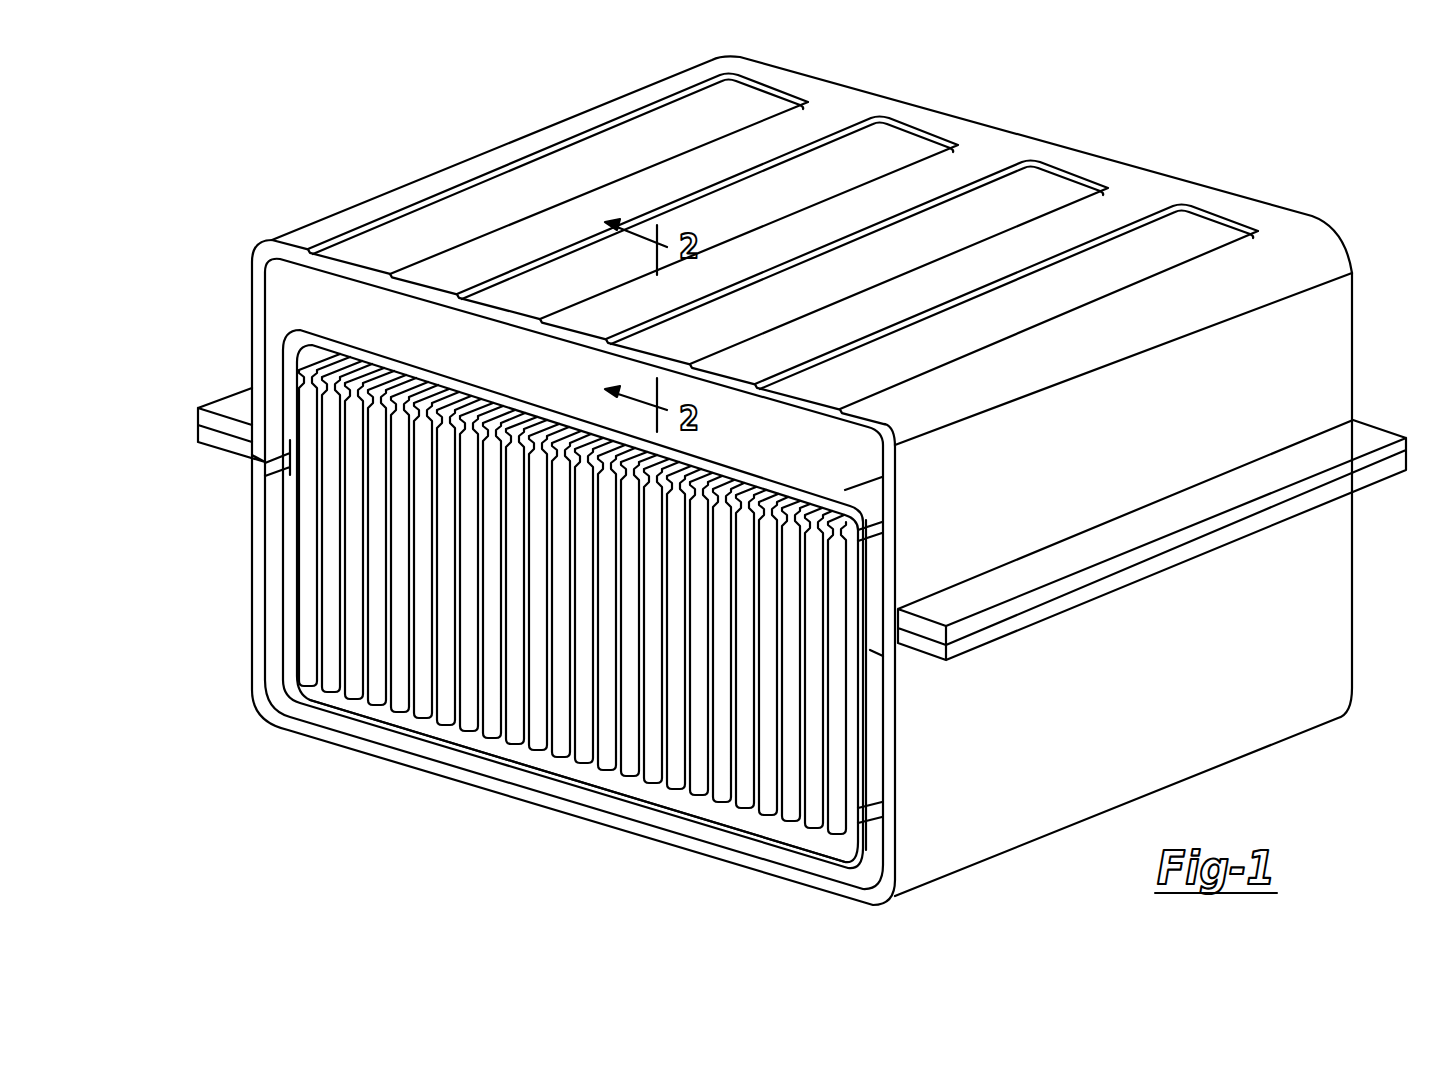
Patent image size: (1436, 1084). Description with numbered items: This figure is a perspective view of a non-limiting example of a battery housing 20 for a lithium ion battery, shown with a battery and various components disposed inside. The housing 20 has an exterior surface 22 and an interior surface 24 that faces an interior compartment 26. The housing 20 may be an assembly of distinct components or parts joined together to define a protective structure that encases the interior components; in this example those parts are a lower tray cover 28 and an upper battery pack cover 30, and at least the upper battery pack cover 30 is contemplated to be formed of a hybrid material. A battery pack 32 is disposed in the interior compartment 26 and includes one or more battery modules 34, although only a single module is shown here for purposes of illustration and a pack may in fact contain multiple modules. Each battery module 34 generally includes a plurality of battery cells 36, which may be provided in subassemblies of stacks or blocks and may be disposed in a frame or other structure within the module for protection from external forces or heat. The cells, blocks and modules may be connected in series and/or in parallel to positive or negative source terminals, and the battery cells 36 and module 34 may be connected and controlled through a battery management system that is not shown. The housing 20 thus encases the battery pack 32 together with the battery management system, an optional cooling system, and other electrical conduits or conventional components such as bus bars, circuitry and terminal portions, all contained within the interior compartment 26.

The battery housing 20 is at (416, 180).
The exterior surface 22 is at (252, 541).
The interior surface 24 is at (282, 708).
The interior compartment 26 is at (426, 696).
The lower tray cover 28 is at (878, 893).
The upper battery pack cover 30 is at (878, 434).
The battery pack 32 is at (301, 323).
The battery module 34 is at (832, 462).
The battery cells 36 is at (772, 800).